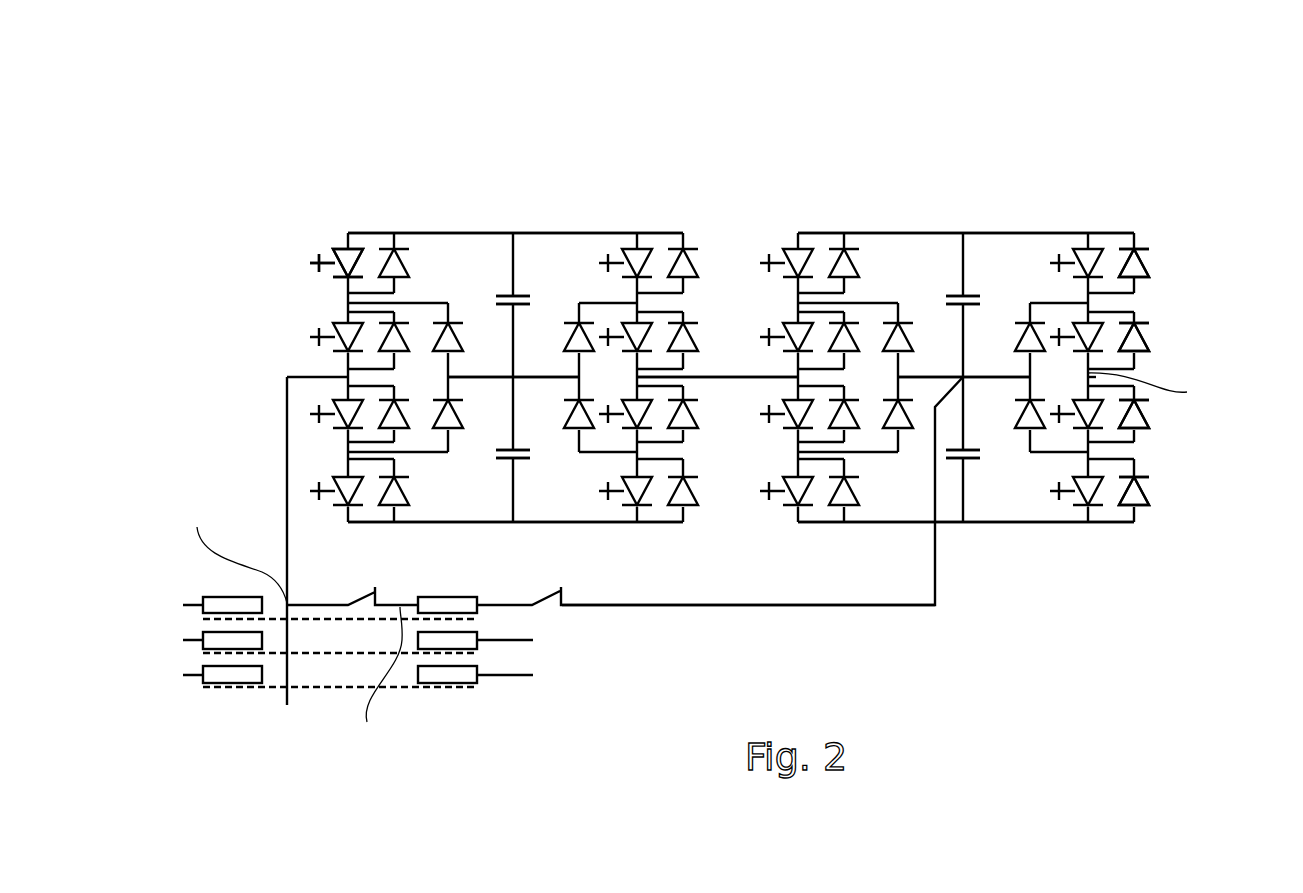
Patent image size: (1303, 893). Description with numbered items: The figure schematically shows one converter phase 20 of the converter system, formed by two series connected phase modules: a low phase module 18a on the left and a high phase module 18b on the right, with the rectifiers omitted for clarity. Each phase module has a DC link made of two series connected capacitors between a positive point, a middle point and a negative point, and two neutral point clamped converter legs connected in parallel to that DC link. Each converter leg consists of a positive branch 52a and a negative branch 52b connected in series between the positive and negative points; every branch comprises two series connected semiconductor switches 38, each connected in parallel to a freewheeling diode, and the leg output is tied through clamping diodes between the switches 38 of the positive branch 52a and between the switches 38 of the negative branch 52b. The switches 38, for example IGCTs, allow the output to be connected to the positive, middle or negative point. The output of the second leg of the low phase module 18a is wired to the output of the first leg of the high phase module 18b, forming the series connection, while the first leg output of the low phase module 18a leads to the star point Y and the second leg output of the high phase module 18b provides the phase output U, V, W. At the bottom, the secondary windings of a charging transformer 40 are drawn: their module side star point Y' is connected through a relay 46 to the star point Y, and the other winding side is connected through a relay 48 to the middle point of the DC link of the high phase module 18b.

The converter phase 20 is at (160, 148).
The low phase module 18a is at (460, 150).
The high phase module 18b is at (1016, 147).
The semiconductor switch 38 is at (337, 252).
The charging transformer 40 is at (277, 725).
The relay 46 is at (372, 598).
The relay 48 is at (553, 612).
The positive branch 52a is at (1180, 292).
The negative branch 52b is at (1147, 457).